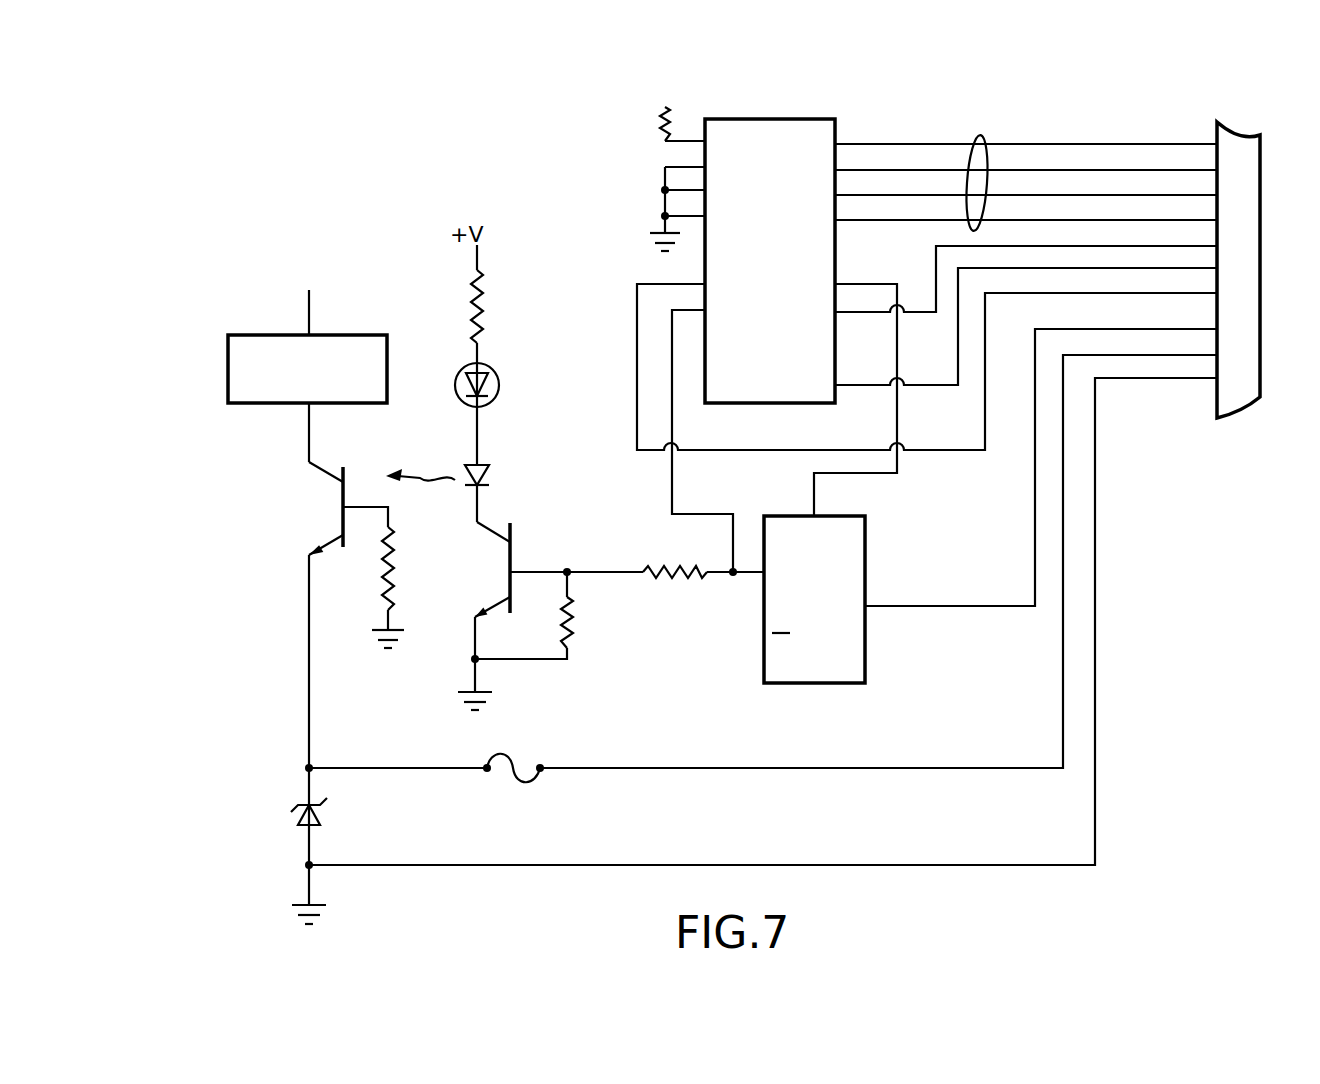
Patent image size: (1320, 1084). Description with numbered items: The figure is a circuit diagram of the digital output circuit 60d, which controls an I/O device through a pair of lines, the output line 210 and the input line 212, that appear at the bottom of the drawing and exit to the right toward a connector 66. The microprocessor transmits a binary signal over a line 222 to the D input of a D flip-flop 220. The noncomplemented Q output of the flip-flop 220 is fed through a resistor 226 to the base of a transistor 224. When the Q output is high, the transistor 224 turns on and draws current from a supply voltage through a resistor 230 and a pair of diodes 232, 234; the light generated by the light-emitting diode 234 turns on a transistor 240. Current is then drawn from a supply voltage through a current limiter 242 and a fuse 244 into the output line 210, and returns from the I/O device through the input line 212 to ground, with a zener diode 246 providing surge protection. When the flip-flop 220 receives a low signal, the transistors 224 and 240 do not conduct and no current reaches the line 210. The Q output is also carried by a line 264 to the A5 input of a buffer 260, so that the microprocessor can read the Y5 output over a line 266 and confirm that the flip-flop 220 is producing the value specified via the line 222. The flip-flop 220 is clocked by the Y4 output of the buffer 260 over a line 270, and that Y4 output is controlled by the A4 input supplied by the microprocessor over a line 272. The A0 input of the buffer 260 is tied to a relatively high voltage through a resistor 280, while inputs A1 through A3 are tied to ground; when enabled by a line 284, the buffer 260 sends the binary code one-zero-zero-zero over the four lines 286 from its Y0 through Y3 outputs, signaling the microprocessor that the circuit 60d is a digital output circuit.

The buffer 260 is at (762, 119).
The resistor 280 is at (660, 131).
The four lines 286 is at (977, 135).
The digital output circuit 60d is at (1209, 252).
The connector 66 is at (1248, 250).
The line 266 is at (860, 314).
The line 284 is at (862, 387).
The line 272 is at (935, 452).
The line 270 is at (845, 478).
The line 264 is at (673, 483).
The D flip-flop 220 is at (865, 660).
The line 222 is at (978, 607).
The resistor 226 is at (656, 576).
The current limiter 242 is at (228, 358).
The transistor 240 is at (320, 466).
The zener diode 246 is at (325, 815).
The fuse 244 is at (502, 757).
The output line 210 is at (893, 768).
The input line 212 is at (886, 865).
The resistor 230 is at (483, 307).
The diode 232 is at (500, 383).
The light-emitting diode 234 is at (490, 478).
The transistor 224 is at (513, 548).